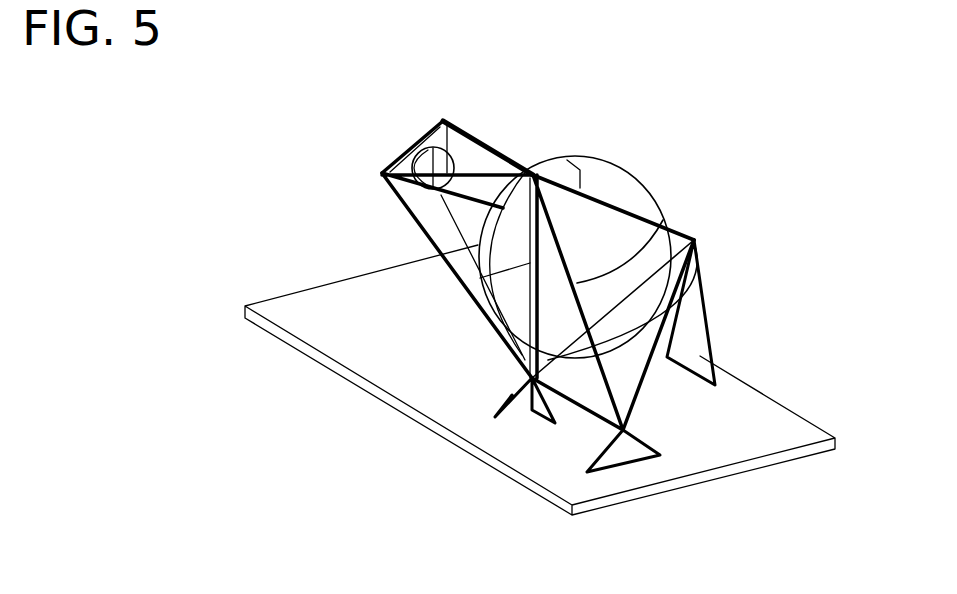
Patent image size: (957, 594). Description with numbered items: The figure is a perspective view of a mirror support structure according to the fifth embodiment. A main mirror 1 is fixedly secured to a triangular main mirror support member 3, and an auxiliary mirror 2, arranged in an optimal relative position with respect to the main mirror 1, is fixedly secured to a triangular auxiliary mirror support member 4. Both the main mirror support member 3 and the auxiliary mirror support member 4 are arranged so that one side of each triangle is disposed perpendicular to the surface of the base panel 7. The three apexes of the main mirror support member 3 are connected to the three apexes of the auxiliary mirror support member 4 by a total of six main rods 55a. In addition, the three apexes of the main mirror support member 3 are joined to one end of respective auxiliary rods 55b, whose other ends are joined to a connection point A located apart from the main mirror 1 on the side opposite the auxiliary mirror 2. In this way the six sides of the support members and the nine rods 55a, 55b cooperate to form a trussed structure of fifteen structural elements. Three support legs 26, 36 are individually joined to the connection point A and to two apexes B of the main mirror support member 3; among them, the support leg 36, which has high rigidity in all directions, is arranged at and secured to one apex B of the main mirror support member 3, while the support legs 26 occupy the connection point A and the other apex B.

The main mirror 1 is at (608, 182).
The auxiliary mirror 2 is at (438, 157).
The main mirror support member 3 is at (620, 240).
The auxiliary mirror support member 4 is at (408, 150).
The base panel 7 is at (767, 423).
The support leg 26 is at (690, 320).
The support leg 36 is at (493, 417).
The main rod 55a is at (468, 173).
The auxiliary rod 55b is at (632, 258).
The connection point A is at (643, 425).
The apex B is at (697, 240).